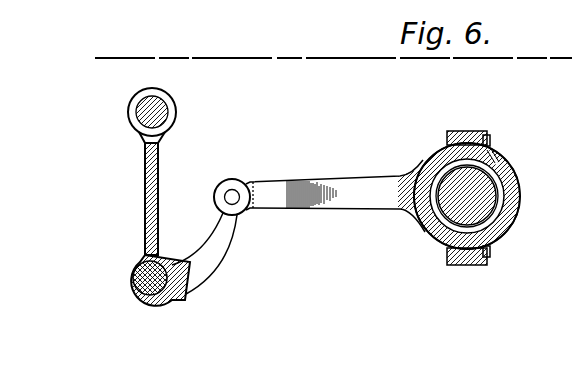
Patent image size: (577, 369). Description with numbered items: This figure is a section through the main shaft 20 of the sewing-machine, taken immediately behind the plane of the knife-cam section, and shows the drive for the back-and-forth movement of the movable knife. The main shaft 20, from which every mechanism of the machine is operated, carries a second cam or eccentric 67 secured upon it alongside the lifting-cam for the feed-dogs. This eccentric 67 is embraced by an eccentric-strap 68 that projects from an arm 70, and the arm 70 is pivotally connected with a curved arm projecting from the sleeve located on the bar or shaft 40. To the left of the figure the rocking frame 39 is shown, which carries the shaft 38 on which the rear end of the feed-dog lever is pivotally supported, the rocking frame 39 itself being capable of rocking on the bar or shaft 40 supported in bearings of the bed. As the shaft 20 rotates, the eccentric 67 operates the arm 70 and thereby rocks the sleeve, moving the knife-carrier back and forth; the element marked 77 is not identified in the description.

The main shaft 20 is at (483, 184).
The shaft 38 is at (136, 126).
The rocking frame 39 is at (125, 199).
The bar or shaft 40 is at (142, 290).
The eccentric 67 is at (494, 208).
The eccentric-strap 68 is at (431, 243).
The arm 70 is at (340, 170).
The curved arm 77 is at (216, 257).